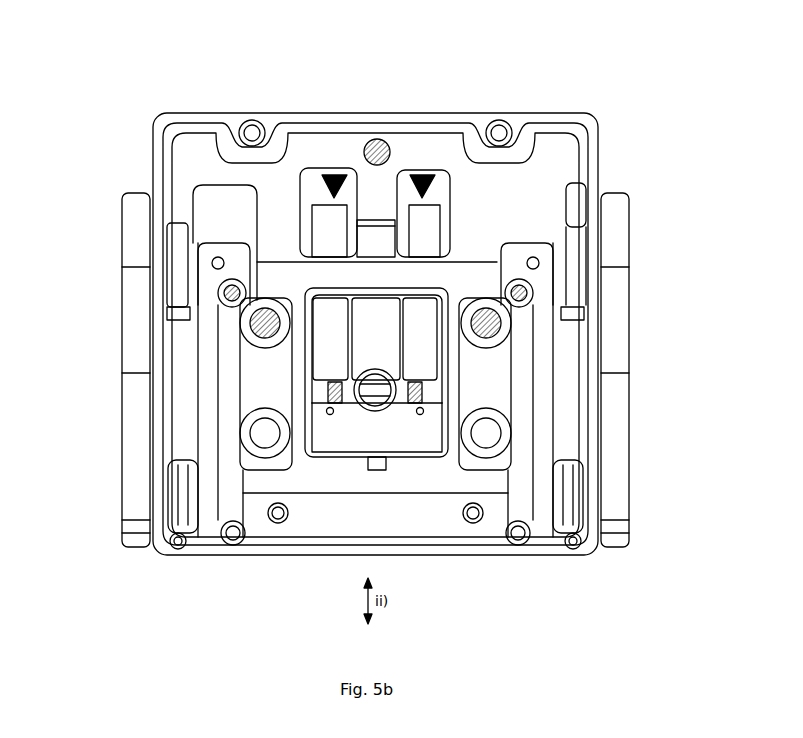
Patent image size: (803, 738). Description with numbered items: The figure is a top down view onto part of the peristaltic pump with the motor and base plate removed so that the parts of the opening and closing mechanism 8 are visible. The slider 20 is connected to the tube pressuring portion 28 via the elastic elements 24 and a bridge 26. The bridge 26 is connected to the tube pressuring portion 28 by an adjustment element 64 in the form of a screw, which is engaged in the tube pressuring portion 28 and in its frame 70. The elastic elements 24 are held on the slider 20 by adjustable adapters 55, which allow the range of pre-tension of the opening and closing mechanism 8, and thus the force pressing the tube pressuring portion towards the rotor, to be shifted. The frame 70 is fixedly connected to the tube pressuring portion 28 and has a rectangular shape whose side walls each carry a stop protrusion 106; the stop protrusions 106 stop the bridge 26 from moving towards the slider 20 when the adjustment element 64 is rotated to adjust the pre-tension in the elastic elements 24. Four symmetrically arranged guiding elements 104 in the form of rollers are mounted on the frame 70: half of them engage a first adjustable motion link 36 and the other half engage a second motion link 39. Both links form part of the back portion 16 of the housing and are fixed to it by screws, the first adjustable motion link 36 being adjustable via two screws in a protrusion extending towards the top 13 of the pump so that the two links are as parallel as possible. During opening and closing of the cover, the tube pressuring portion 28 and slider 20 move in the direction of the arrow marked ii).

The opening and closing mechanism 8 is at (354, 85).
The top 13 is at (274, 115).
The back portion 16 is at (533, 115).
The slider 20 is at (217, 176).
The elastic elements 24 is at (325, 225).
The bridge 26 is at (413, 434).
The tube pressuring portion 28 is at (337, 512).
The first adjustable motion link 36 is at (520, 365).
The second motion link 39 is at (233, 465).
The adjustable adapters 55 is at (335, 176).
The adjustment element 64 is at (370, 468).
The frame 70 is at (477, 392).
The guiding elements 104 is at (242, 432).
The stop protrusions 106 is at (312, 405).